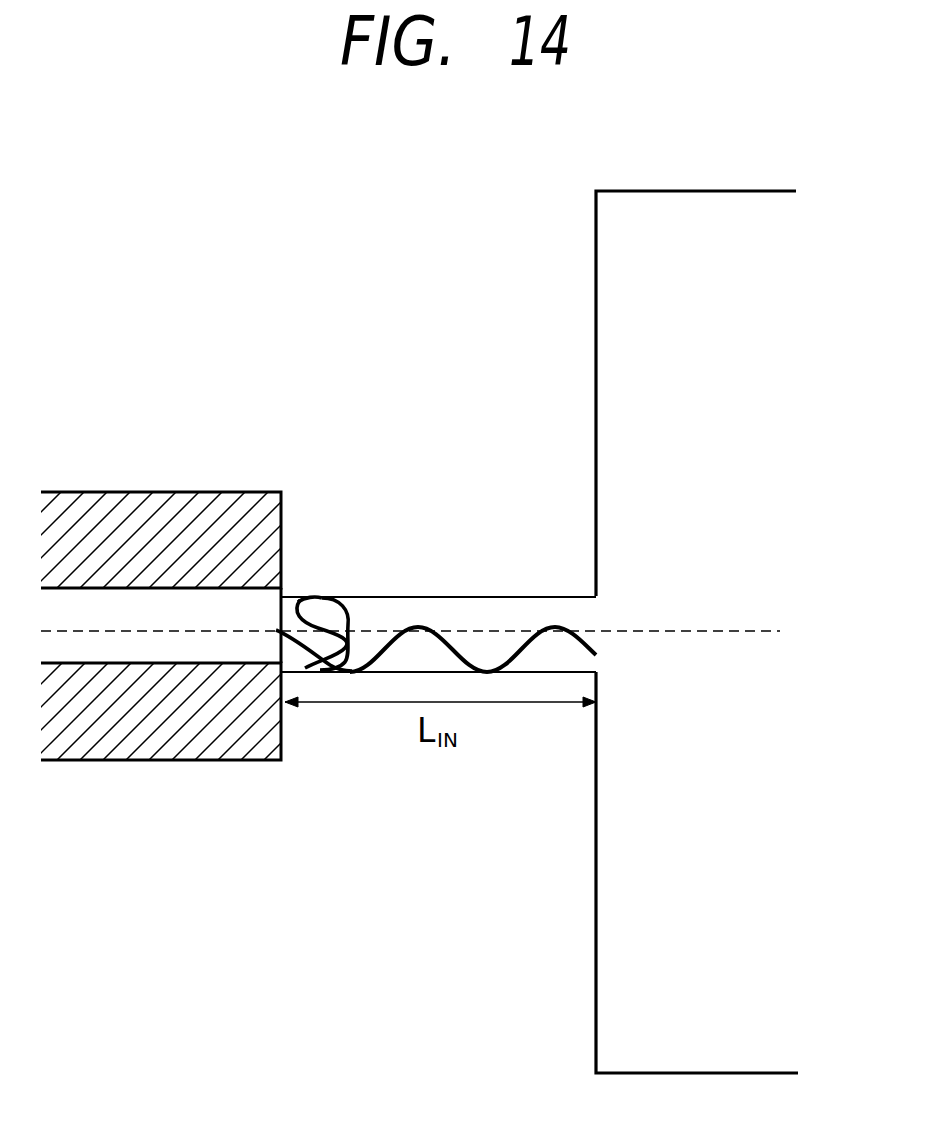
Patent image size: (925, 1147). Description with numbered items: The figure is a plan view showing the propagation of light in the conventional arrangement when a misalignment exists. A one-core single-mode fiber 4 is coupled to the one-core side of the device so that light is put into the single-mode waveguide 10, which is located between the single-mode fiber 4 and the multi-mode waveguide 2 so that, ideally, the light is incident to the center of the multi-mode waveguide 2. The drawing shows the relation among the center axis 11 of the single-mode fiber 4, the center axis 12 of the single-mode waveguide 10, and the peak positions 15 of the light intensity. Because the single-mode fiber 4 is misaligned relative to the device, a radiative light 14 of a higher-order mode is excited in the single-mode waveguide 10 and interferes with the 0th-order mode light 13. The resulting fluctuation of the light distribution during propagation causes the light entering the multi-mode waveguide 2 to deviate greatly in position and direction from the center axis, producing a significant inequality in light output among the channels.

The multi-mode waveguide 2 is at (618, 308).
The single-mode fiber 4 is at (147, 513).
The single-mode waveguide 10 is at (513, 605).
The center axis of the single-mode fiber 11 is at (127, 629).
The center axis of the single-mode waveguide 12 is at (695, 632).
The 0th-order mode light 13 is at (340, 607).
The radiative light of a higher-order mode 14 is at (312, 600).
The peak positions of the light intensity 15 is at (458, 650).